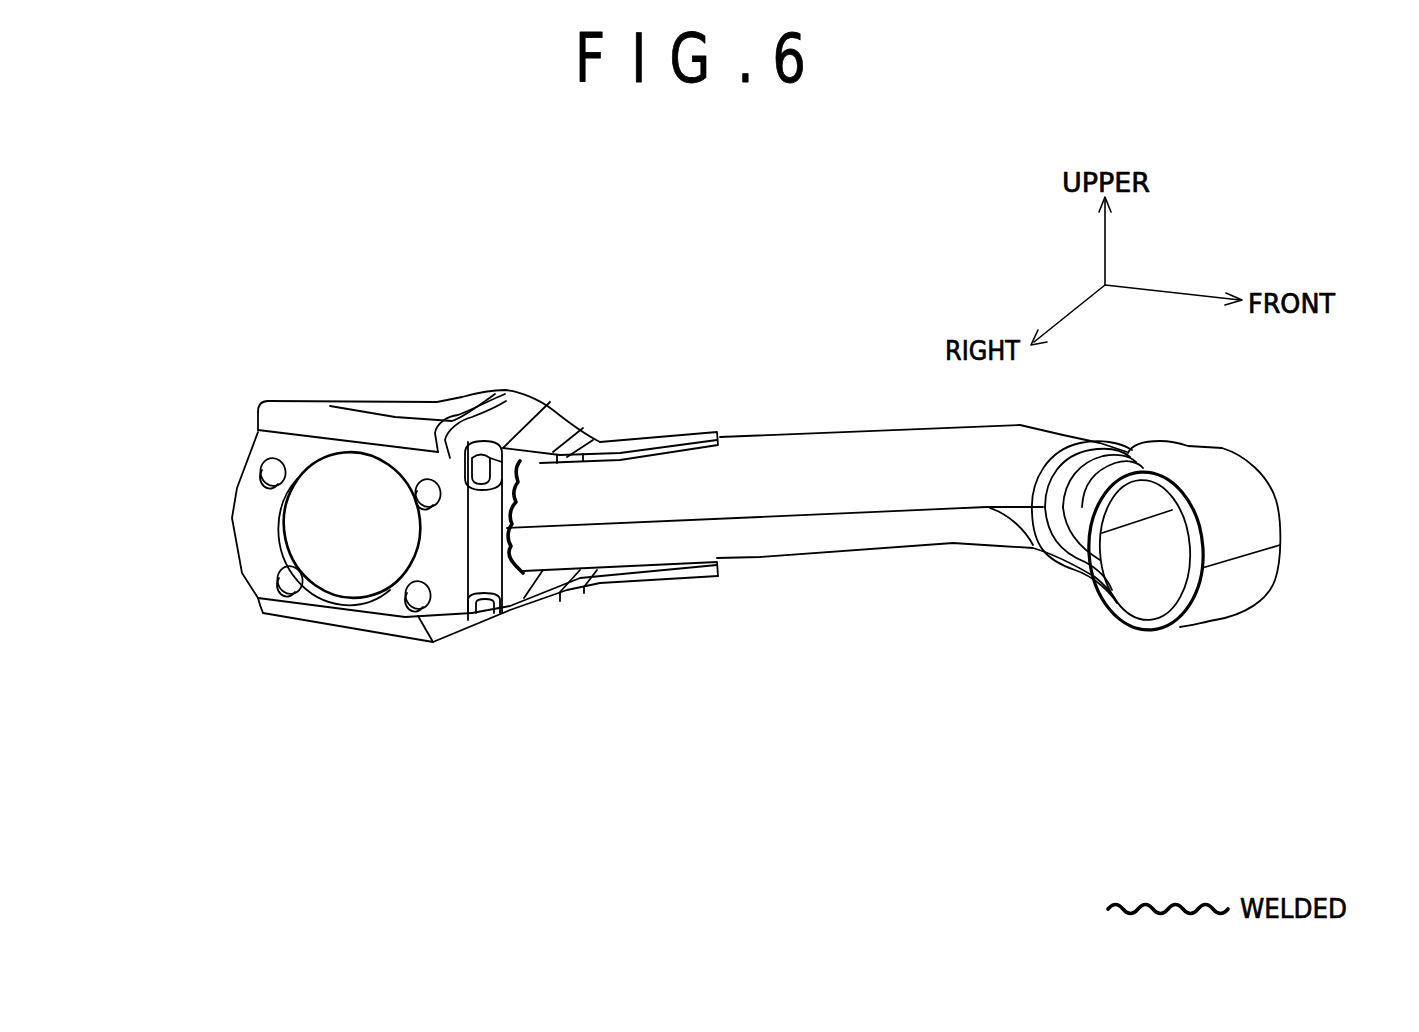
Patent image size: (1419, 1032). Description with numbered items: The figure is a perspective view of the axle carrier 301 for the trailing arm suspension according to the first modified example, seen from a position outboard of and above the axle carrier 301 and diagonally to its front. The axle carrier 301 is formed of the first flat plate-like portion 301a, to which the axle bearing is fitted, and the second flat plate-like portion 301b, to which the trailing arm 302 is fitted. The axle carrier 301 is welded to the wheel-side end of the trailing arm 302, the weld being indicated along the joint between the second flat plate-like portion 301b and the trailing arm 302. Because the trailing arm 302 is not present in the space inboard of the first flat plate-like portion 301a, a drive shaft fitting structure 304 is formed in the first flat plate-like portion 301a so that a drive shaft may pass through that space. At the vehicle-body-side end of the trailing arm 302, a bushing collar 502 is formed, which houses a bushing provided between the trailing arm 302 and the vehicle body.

The axle carrier 301 is at (399, 368).
The first flat plate-like portion 301a is at (244, 509).
The second flat plate-like portion 301b is at (513, 579).
The trailing arm 302 is at (892, 528).
The drive shaft fitting structure 304 is at (368, 580).
The bushing collar 502 is at (1250, 507).